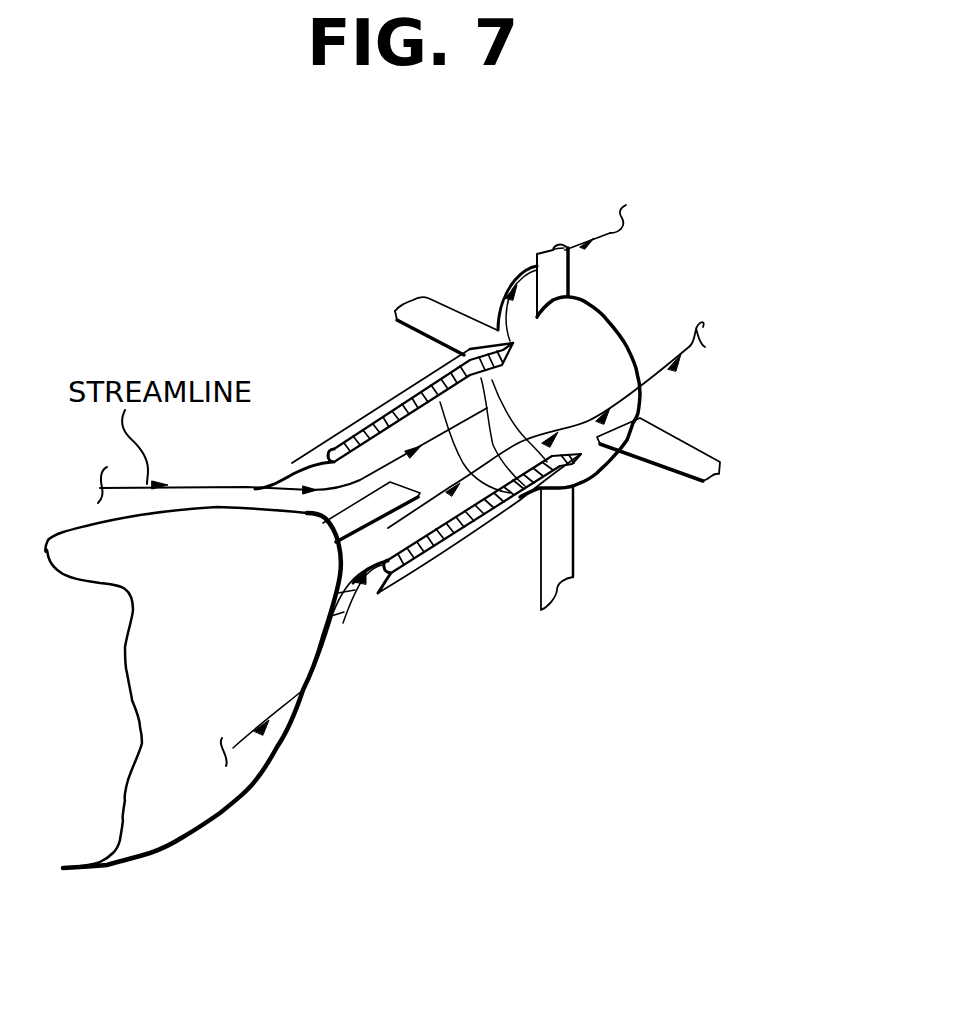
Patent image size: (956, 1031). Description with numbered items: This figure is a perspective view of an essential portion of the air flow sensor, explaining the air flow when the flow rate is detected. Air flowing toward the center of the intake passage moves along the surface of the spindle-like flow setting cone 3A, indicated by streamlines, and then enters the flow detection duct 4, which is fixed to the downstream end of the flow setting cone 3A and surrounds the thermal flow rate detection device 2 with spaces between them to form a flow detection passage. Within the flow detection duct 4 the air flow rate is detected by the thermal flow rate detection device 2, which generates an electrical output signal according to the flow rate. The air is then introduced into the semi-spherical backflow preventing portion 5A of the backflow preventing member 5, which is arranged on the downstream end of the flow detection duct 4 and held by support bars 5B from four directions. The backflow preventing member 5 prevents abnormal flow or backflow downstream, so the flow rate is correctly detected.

The thermal flow rate detection device 2 is at (372, 503).
The flow setting cone 3A is at (254, 749).
The flow detection duct 4 is at (371, 409).
The backflow preventing member 5 is at (796, 270).
The backflow preventing portion 5A is at (602, 343).
The support bars 5B is at (660, 450).